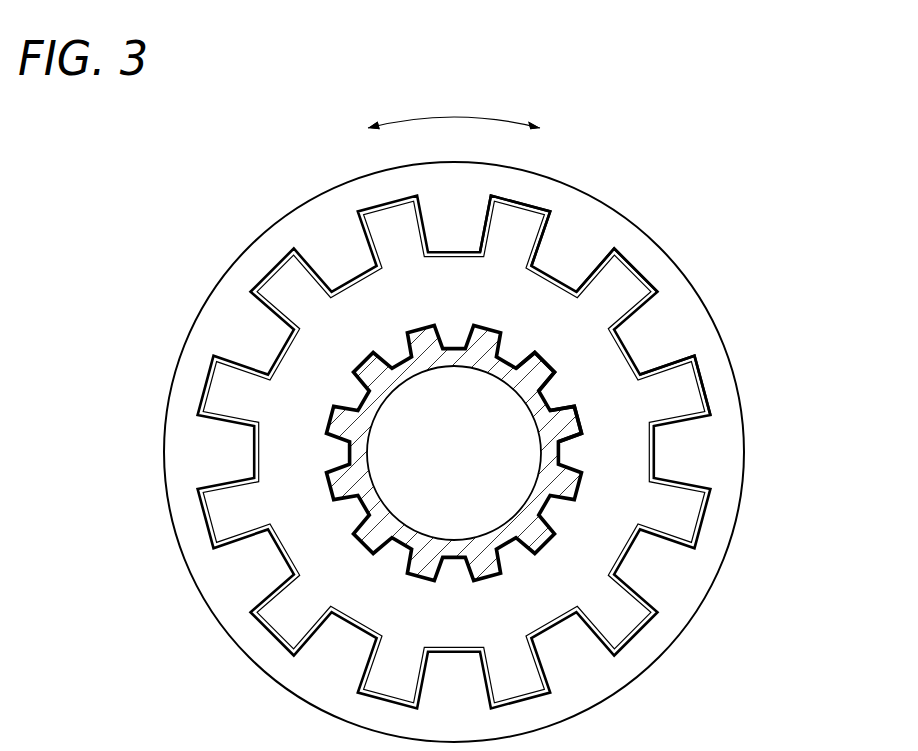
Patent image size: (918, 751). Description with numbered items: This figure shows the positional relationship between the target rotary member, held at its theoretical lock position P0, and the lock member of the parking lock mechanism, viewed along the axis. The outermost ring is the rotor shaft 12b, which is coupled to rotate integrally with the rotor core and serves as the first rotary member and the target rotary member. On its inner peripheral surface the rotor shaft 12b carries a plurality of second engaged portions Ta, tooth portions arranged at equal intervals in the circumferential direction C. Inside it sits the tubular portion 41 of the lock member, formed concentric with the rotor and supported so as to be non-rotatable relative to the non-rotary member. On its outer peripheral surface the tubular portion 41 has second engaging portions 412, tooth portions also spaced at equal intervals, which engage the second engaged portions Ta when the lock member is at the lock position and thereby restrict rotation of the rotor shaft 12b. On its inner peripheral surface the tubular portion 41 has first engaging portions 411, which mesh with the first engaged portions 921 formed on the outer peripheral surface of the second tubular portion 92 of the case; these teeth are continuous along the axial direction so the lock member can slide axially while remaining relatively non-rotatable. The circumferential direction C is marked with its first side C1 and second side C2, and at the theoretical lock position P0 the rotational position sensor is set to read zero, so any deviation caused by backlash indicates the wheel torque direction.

The tubular portion 41 is at (503, 424).
The second engaging portions 412 is at (673, 382).
The first engaging portions 411 is at (513, 353).
The second tubular portion 92 is at (462, 447).
The first engaged portions 921 is at (558, 408).
The rotor shaft 12b is at (523, 185).
The second engaged portions Ta is at (262, 340).
The theoretical lock position P0 is at (292, 203).
The circumferential direction C is at (454, 105).
The circumferential direction first side C1 is at (355, 128).
The circumferential direction second side C2 is at (553, 128).